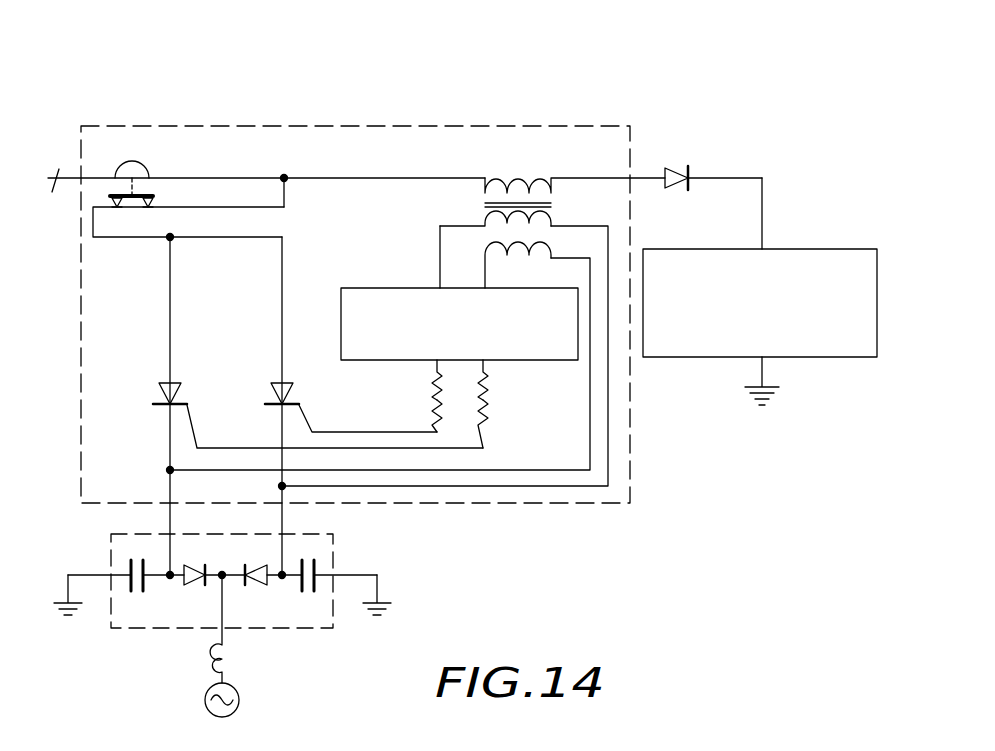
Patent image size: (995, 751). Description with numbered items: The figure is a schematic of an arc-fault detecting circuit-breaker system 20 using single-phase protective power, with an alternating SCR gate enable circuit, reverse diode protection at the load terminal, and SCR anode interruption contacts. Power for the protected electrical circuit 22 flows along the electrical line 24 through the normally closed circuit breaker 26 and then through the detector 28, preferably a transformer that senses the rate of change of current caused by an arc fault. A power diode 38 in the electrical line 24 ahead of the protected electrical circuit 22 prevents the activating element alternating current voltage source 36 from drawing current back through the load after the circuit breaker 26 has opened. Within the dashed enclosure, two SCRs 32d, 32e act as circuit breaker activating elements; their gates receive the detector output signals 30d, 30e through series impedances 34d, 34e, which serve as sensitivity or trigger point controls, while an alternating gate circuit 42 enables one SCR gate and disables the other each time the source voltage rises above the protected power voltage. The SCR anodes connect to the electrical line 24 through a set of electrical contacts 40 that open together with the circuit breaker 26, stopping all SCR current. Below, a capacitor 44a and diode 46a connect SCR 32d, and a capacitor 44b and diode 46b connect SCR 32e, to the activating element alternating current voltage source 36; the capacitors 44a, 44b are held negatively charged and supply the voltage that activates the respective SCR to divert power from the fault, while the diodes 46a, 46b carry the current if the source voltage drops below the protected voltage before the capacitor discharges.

The arc-fault detecting circuit-breaker system 20 is at (636, 130).
The protected electrical circuit 22 is at (838, 249).
The electrical line 24 is at (750, 178).
The circuit breaker 26 is at (140, 166).
The detector 28 is at (539, 173).
The output signal 30d is at (485, 441).
The output signal 30e is at (432, 427).
The SCR 32d is at (158, 394).
The SCR 32e is at (270, 394).
The impedance 34d is at (488, 388).
The impedance 34e is at (432, 390).
The activating element alternating current voltage source 36 is at (240, 700).
The power diode 38 is at (683, 168).
The electrical contacts 40 is at (163, 190).
The alternating gate circuit 42 is at (370, 288).
The capacitor 44a is at (131, 564).
The capacitor 44b is at (316, 572).
The diode 46a is at (192, 566).
The diode 46b is at (248, 588).